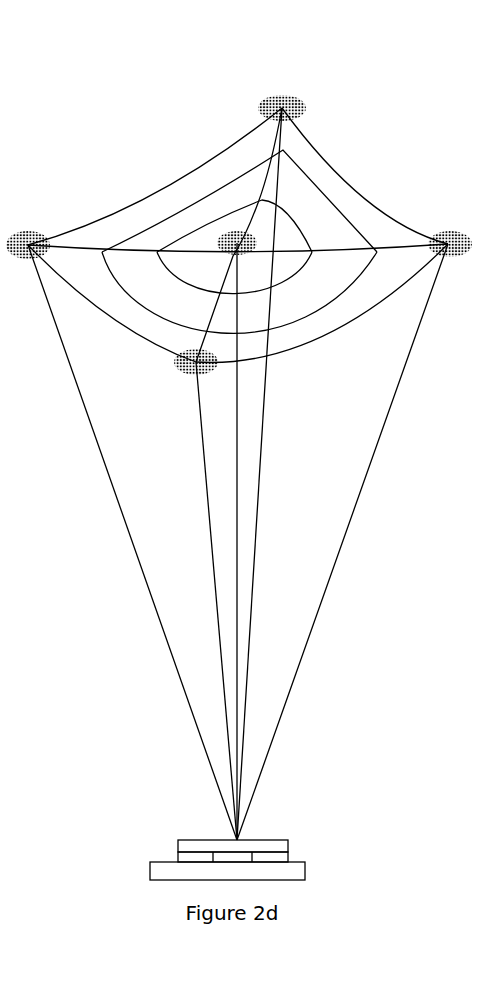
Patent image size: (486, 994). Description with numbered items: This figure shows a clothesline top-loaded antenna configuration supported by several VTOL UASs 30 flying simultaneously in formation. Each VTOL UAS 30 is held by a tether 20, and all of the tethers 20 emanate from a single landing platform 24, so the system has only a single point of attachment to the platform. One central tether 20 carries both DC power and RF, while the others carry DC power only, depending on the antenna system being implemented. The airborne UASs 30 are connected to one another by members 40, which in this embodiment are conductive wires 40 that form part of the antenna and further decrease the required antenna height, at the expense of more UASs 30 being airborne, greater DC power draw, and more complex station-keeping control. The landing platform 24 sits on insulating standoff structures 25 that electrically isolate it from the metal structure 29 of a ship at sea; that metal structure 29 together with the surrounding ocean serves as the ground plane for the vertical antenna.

The tether 20 is at (237, 442).
The landing platform 24 is at (289, 848).
The insulating standoff structure 25 is at (183, 857).
The metal structure of the ship 29 is at (162, 868).
The VTOL UAS 30 is at (282, 96).
The conductive wires 40 is at (194, 201).